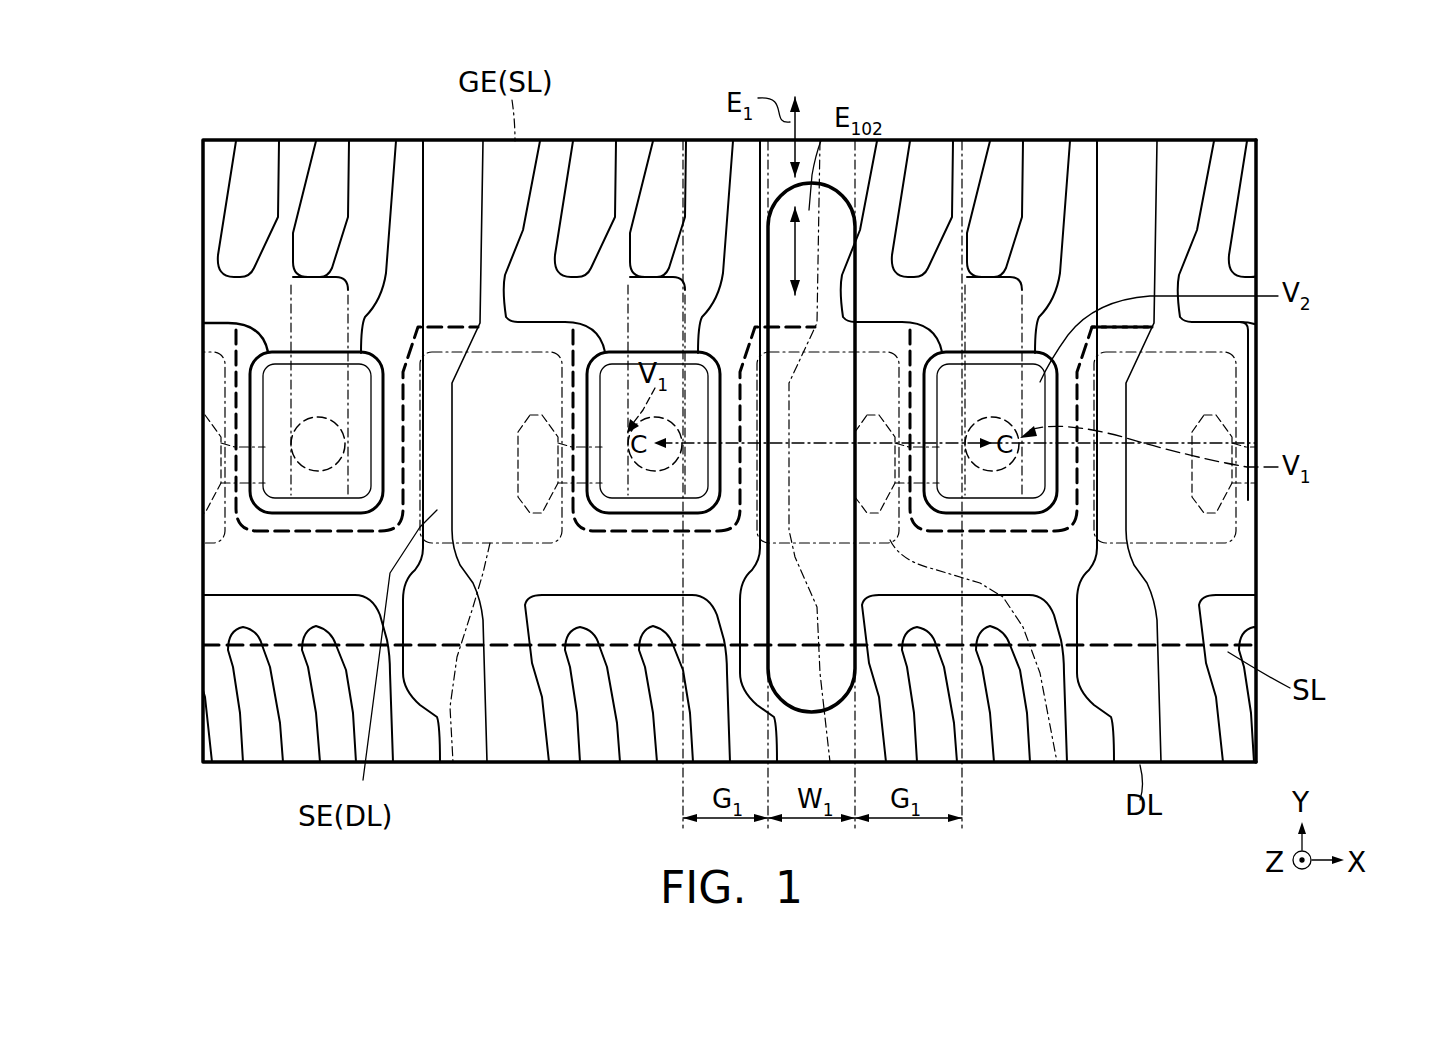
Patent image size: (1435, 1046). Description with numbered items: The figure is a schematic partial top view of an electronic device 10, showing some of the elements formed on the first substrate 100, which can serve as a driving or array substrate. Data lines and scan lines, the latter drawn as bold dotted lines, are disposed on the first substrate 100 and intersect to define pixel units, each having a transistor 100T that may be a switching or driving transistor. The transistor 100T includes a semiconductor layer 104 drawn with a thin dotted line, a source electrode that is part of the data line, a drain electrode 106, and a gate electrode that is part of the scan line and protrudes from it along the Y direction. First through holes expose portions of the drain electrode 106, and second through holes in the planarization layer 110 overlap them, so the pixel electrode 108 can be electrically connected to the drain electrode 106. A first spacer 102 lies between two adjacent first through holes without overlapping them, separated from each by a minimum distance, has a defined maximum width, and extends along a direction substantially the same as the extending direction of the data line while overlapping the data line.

The electronic device 10 is at (84, 53).
The first substrate 100 is at (185, 131).
The first spacer 102 is at (883, 210).
The semiconductor layer 104 is at (232, 332).
The drain electrode 106 is at (1062, 404).
The pixel electrode 108 is at (1046, 165).
The planarization layer 110 is at (1257, 248).
The transistor 100T is at (1333, 358).